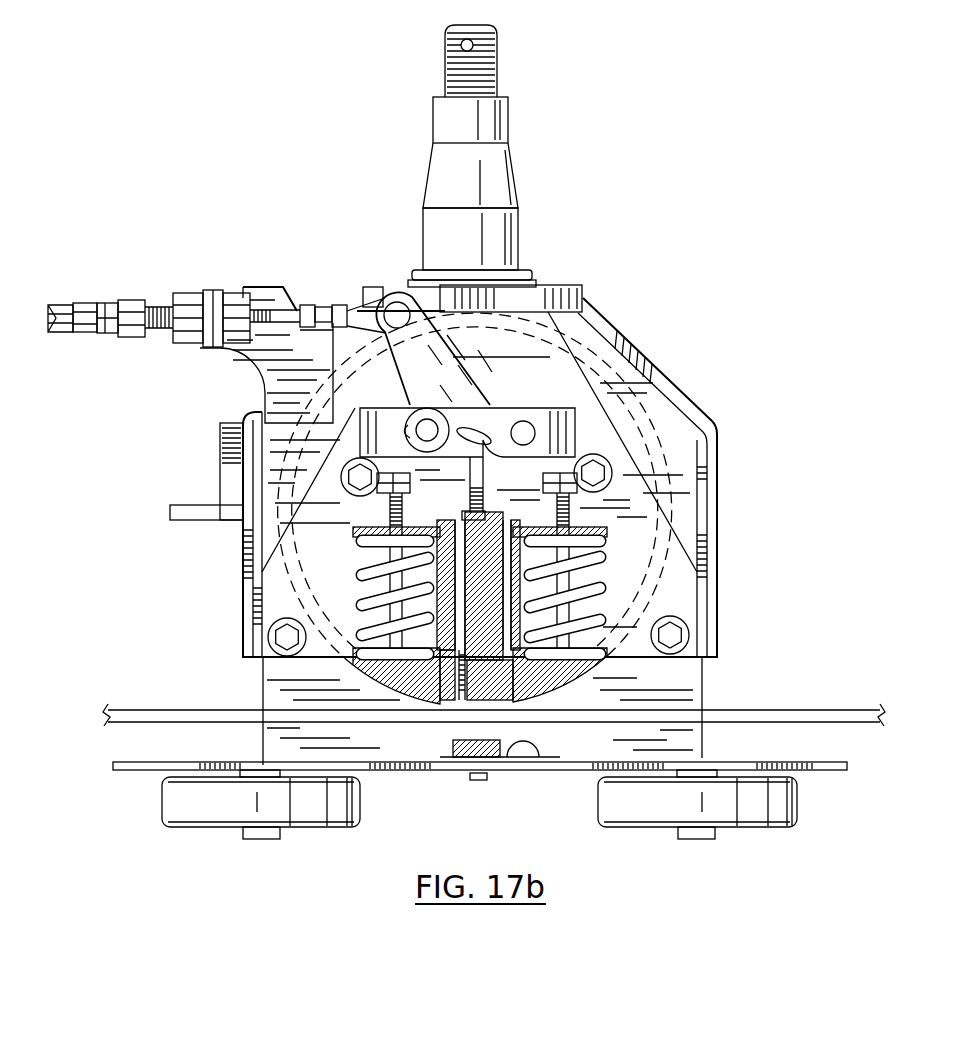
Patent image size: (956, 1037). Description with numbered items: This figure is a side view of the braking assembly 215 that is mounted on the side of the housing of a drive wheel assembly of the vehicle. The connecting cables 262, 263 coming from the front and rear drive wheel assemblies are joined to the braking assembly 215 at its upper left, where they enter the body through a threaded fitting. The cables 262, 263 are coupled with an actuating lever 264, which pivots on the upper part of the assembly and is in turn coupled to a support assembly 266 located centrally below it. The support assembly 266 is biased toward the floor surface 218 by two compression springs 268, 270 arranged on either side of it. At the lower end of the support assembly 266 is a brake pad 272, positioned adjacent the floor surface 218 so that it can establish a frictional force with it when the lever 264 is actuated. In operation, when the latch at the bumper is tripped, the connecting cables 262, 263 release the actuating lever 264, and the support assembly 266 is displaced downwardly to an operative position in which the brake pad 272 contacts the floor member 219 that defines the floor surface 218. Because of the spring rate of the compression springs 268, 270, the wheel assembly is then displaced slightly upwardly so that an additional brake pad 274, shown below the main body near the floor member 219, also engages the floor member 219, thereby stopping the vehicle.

The braking assembly 215 is at (222, 667).
The floor surface 218 is at (733, 708).
The floor member 219 is at (808, 716).
The connecting cable 262 is at (62, 305).
The connecting cable 263 is at (90, 305).
The actuating lever 264 is at (473, 373).
The support assembly 266 is at (533, 700).
The compression spring 268 is at (372, 573).
The compression spring 270 is at (592, 597).
The brake pad 272 is at (495, 698).
The additional brake pad 274 is at (542, 760).